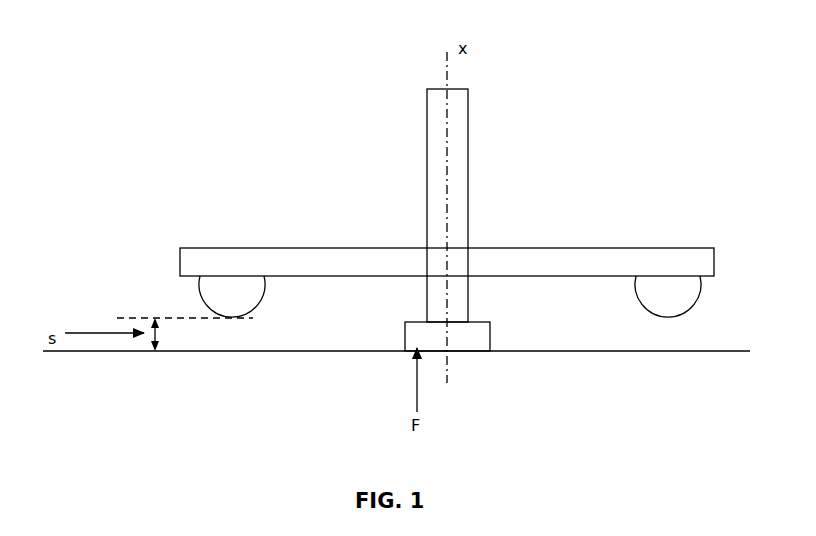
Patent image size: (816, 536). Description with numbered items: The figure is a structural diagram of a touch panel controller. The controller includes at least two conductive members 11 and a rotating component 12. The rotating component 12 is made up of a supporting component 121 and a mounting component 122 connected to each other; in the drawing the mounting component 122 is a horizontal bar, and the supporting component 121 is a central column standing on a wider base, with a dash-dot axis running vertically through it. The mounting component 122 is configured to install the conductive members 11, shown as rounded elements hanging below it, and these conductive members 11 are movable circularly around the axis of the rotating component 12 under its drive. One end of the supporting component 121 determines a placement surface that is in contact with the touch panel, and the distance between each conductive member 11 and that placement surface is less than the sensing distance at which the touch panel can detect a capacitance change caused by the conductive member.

The conductive member 11 is at (233, 302).
The rotating component 12 is at (447, 276).
The supporting component 121 is at (477, 335).
The mounting component 122 is at (605, 276).